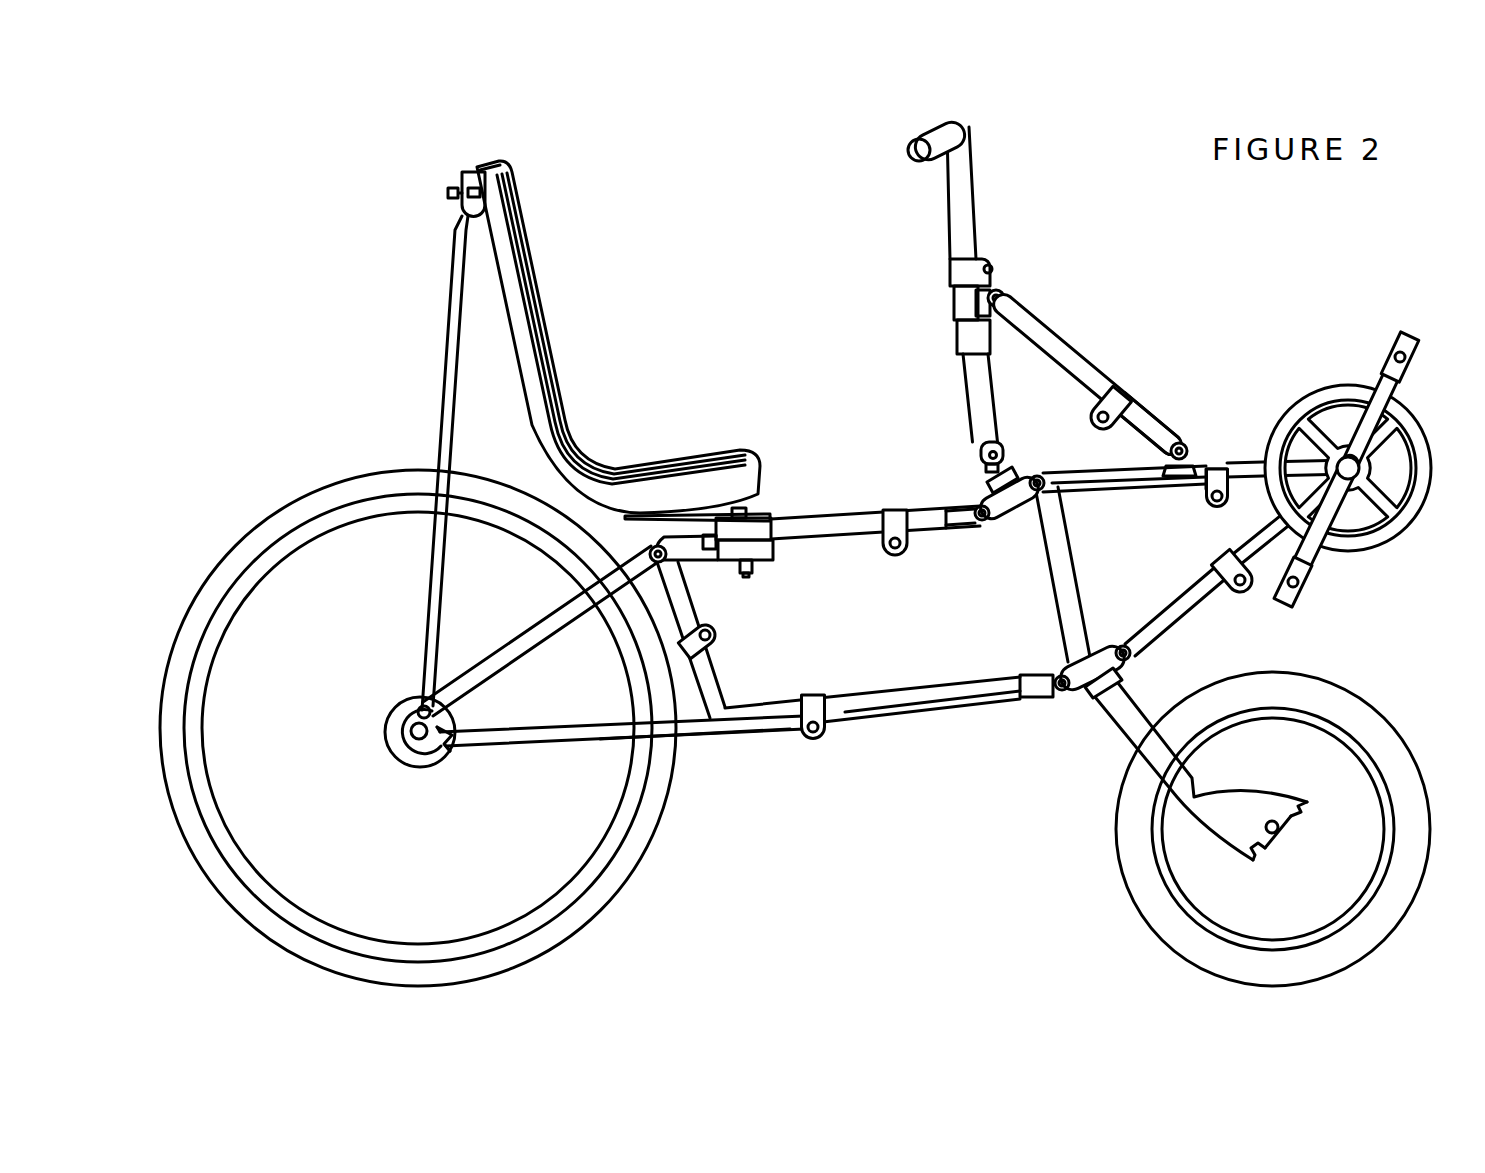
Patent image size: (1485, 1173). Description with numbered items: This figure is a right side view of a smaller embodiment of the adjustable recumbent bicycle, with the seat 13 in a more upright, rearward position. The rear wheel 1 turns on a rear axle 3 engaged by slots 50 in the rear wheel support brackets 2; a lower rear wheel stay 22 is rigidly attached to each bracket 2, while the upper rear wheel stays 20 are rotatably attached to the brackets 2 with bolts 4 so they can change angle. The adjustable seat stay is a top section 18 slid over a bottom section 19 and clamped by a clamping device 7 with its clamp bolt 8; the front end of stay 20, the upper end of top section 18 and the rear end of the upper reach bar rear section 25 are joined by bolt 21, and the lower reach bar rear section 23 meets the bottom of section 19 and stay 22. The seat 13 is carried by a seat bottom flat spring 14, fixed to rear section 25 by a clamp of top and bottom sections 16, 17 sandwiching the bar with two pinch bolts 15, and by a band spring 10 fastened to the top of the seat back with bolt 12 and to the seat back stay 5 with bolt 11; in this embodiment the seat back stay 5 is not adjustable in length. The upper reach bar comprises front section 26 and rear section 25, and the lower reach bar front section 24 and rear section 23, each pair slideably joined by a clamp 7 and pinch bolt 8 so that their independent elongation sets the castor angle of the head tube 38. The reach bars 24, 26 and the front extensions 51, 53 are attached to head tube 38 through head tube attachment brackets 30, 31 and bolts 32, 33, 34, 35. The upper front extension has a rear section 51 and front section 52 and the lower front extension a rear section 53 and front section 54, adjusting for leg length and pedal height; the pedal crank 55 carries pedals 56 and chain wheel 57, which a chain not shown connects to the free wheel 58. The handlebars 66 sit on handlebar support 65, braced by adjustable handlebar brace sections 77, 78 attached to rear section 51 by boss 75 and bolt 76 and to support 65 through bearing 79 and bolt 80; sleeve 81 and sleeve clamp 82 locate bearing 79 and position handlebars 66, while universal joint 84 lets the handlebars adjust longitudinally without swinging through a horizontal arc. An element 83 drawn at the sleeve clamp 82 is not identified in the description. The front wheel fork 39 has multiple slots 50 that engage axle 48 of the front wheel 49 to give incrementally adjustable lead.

The rear wheel 1 is at (300, 527).
The rear wheel support bracket 2 is at (407, 737).
The rear axle 3 is at (409, 722).
The bolt 4 is at (416, 705).
The seat back stay 5 is at (448, 374).
The clamping device 7 is at (683, 650).
The clamp bolt 8 is at (716, 634).
The band spring 10 is at (471, 173).
The bolt 11 is at (450, 192).
The bolt 12 is at (508, 166).
The seat 13 is at (545, 357).
The seat bottom flat spring 14 is at (702, 506).
The pinch bolt 15 is at (754, 573).
The top section of clamping device 16 is at (757, 528).
The bottom section of clamping device 17 is at (772, 549).
The top section of adjustable seat stay 18 is at (676, 588).
The bottom section of adjustable seat stay 19 is at (721, 640).
The upper rear wheel stay 20 is at (527, 640).
The bolt 21 is at (649, 552).
The lower rear wheel stay 22 is at (600, 744).
The rear section of lower reach bar 23 is at (760, 713).
The front section of lower reach bar 24 is at (934, 711).
The rear section of upper reach bar 25 is at (851, 525).
The front section of upper reach bar 26 is at (936, 514).
The head tube attachment bracket 30 is at (1003, 503).
The head tube attachment bracket 31 is at (1078, 673).
The bolt 32 is at (980, 522).
The bolt 33 is at (1040, 491).
The bolt 34 is at (1057, 693).
The bolt 35 is at (1137, 653).
The head tube 38 is at (1050, 590).
The front wheel fork 39 is at (1127, 724).
The front wheel axle 48 is at (1272, 821).
The front wheel 49 is at (1172, 917).
The slot 50 is at (443, 749).
The rear section of upper front extension 51 is at (1082, 480).
The front section of upper front extension 52 is at (1247, 470).
The rear section of lower front extension 53 is at (1180, 600).
The front section of lower front extension 54 is at (1267, 540).
The pedal crank 55 is at (1383, 387).
The pedal 56 is at (1412, 342).
The chain wheel 57 is at (1390, 527).
The free wheel 58 is at (428, 762).
The handlebar support 65 is at (975, 395).
The handlebars 66 is at (966, 186).
The boss 75 is at (1200, 460).
The bolt 76 is at (1179, 443).
The lower section of handlebar brace 77 is at (1140, 408).
The upper section of handlebar brace 78 is at (1059, 349).
The bearing 79 is at (960, 305).
The bolt 80 is at (1006, 294).
The sleeve 81 is at (966, 335).
The sleeve clamp 82 is at (961, 273).
The handlebar clamp bolt 83 is at (993, 264).
The universal joint 84 is at (996, 440).